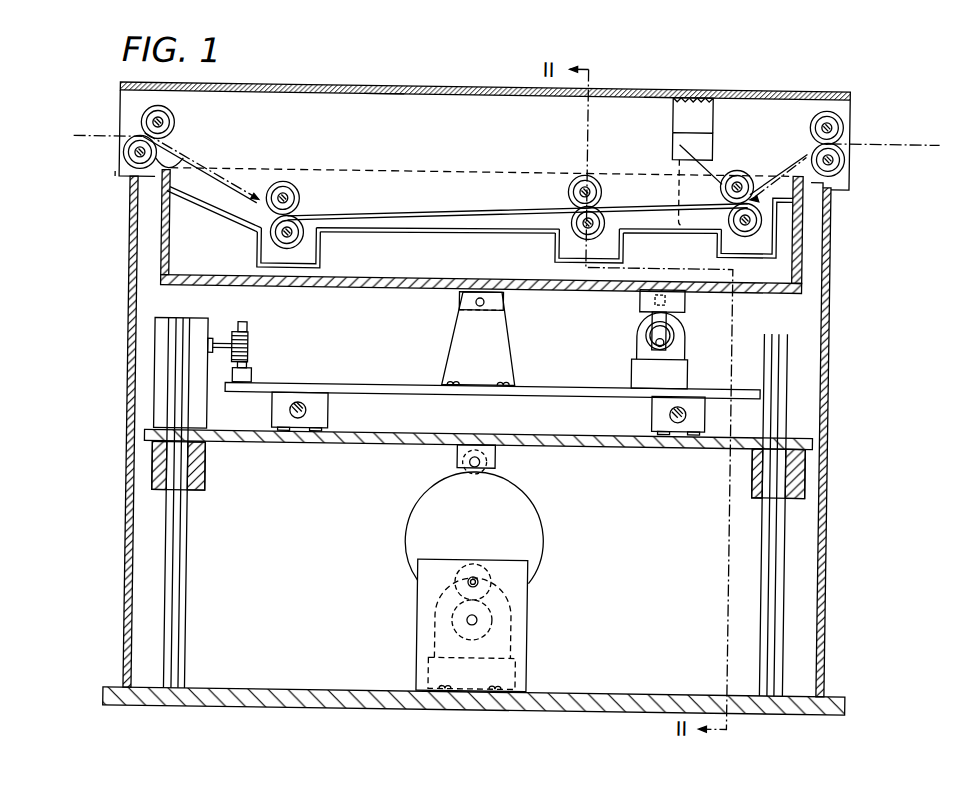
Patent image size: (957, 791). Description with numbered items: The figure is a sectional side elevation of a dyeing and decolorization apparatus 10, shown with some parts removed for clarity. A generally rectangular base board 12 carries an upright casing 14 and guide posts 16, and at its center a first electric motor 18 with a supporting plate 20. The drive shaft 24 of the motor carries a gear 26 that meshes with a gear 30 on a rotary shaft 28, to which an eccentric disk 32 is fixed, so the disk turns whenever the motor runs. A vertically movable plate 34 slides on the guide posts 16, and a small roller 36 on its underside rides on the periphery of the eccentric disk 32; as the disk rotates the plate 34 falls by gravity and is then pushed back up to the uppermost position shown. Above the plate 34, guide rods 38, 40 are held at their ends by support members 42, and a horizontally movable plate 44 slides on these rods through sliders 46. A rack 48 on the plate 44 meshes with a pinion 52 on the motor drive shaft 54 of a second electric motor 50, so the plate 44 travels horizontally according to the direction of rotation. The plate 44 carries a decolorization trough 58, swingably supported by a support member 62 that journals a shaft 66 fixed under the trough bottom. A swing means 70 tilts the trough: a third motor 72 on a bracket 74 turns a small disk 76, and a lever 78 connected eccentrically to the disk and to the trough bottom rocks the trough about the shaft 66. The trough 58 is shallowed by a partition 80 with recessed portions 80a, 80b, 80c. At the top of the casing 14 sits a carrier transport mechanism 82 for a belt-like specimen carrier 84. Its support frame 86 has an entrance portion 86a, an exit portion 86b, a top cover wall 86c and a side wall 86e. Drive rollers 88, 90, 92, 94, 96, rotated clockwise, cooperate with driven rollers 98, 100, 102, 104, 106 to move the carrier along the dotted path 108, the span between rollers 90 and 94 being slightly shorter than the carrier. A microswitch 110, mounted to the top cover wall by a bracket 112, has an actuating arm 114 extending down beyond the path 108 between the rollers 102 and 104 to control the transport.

The dyeing and decolorization apparatus 10 is at (832, 305).
The base board 12 is at (631, 692).
The casing 14 is at (830, 548).
The guide posts 16 is at (764, 541).
The first electric motor 18 is at (433, 593).
The supporting plate 20 is at (533, 602).
The drive shaft 24 is at (455, 617).
The gear 26 is at (440, 640).
The rotary shaft 28 is at (481, 575).
The gear 30 is at (467, 562).
The eccentric disk 32 is at (542, 509).
The vertically movable plate 34 is at (408, 445).
The small roller 36 is at (496, 460).
The guide rod 38 is at (297, 421).
The guide rod 40 is at (675, 416).
The support members 42 is at (330, 430).
The horizontally movable plate 44 is at (552, 389).
The sliders 46 is at (272, 420).
The rack 48 is at (248, 383).
The second electric motor 50 is at (176, 322).
The pinion 52 is at (247, 331).
The motor drive shaft 54 is at (219, 346).
The decolorization trough 58 is at (404, 290).
The support member 62 is at (496, 340).
The shaft 66 is at (486, 303).
The swing means 70 is at (630, 320).
The third motor 72 is at (677, 345).
The bracket 74 is at (683, 372).
The small disk 76 is at (671, 327).
The lever 78 is at (646, 335).
The partition 80 is at (408, 232).
The recessed portion 80a is at (305, 253).
The recessed portion 80b is at (571, 253).
The recessed portion 80c is at (722, 236).
The carrier transport mechanism 82 is at (459, 119).
The specimen carrier 84 is at (392, 213).
The support frame 86 is at (293, 88).
The entrance portion 86a is at (122, 110).
The exit portion 86b is at (836, 102).
The top cover wall 86c is at (649, 99).
The side wall 86e is at (379, 105).
The drive roller 88 is at (120, 158).
The drive roller 90 is at (266, 240).
The drive roller 92 is at (616, 238).
The drive roller 94 is at (751, 229).
The drive roller 96 is at (847, 168).
The driven roller 98 is at (173, 127).
The driven roller 100 is at (296, 198).
The driven roller 102 is at (575, 177).
The driven roller 104 is at (737, 168).
The driven roller 106 is at (839, 122).
The path 108 is at (888, 140).
The microswitch 110 is at (674, 137).
The bracket 112 is at (676, 115).
The actuating arm 114 is at (705, 164).